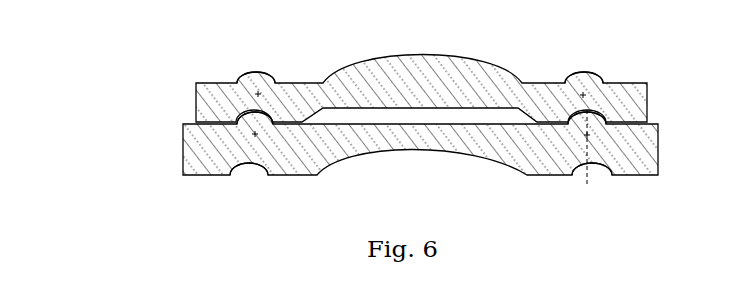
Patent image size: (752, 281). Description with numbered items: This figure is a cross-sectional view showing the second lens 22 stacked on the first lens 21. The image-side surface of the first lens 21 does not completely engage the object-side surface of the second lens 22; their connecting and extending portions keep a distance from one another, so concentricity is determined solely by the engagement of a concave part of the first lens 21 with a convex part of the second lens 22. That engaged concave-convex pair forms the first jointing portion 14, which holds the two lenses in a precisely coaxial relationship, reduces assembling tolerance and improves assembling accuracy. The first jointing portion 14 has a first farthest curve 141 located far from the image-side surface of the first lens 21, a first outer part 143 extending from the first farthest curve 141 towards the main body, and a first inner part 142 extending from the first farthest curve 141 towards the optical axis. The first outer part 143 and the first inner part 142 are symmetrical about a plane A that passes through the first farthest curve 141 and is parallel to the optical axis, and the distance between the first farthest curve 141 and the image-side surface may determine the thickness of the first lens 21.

The first jointing portion 14 is at (250, 110).
The first lens 21 is at (208, 102).
The second lens 22 is at (193, 147).
The first farthest curve 141 is at (584, 125).
The first inner part 142 is at (584, 125).
The first outer part 143 is at (607, 168).